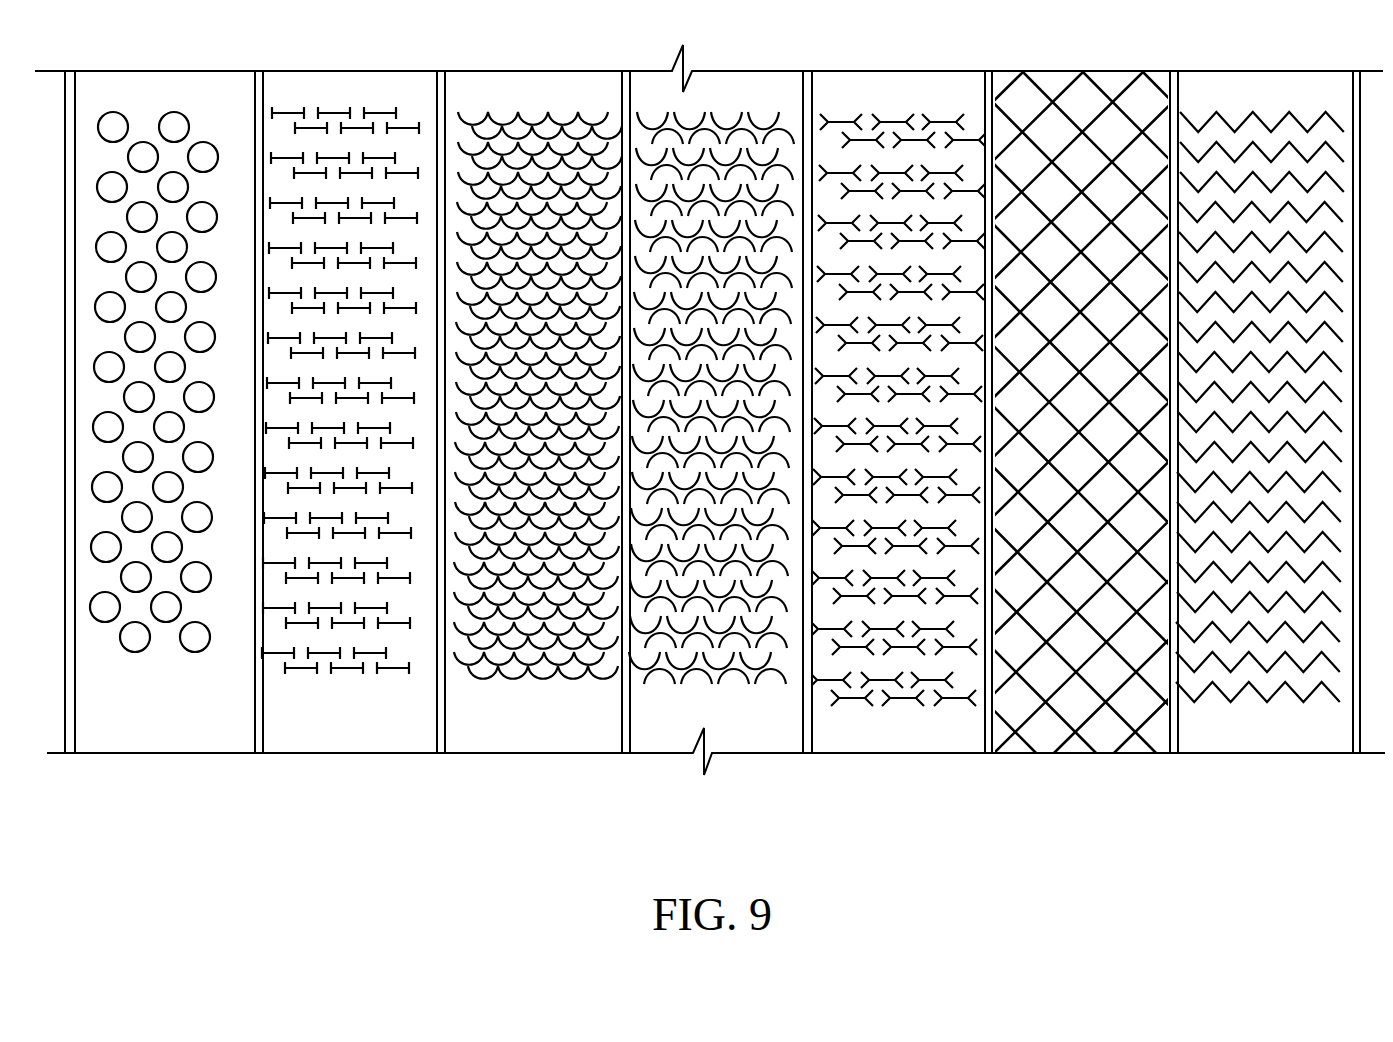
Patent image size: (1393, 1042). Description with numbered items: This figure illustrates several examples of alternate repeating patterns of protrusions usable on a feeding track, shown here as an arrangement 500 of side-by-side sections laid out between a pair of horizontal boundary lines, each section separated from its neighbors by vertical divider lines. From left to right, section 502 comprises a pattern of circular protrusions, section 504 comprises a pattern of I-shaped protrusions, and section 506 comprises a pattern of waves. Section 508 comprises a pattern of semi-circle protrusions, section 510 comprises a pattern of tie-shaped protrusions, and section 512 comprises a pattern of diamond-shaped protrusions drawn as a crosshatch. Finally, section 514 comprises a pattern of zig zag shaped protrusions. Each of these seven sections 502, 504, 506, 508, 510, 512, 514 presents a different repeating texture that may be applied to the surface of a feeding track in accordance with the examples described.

The substrate with patterned regions 500 is at (1293, 46).
The section 502 is at (162, 723).
The section 504 is at (333, 727).
The section 506 is at (540, 727).
The section 508 is at (687, 725).
The section 510 is at (877, 727).
The section 512 is at (1070, 727).
The section 514 is at (1267, 727).